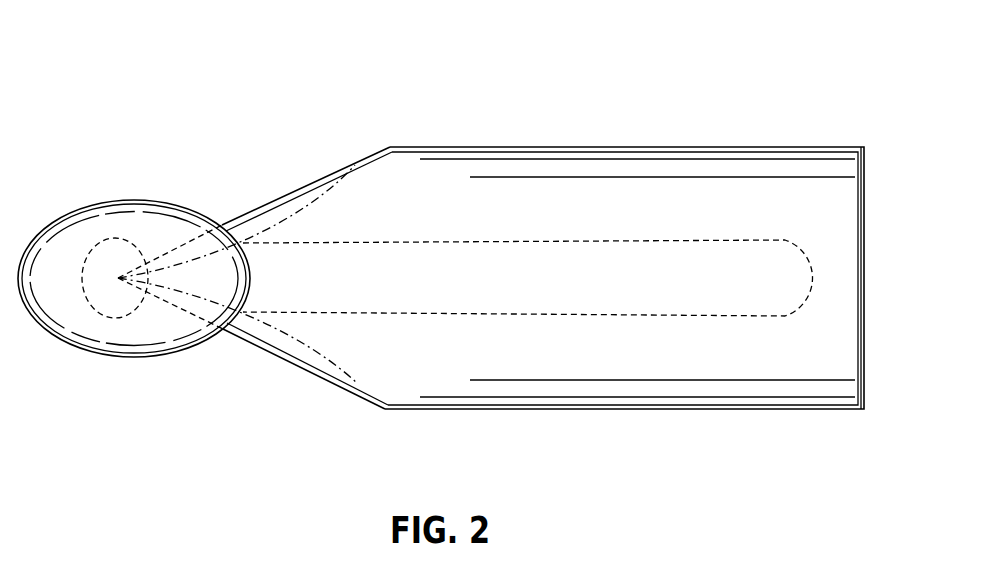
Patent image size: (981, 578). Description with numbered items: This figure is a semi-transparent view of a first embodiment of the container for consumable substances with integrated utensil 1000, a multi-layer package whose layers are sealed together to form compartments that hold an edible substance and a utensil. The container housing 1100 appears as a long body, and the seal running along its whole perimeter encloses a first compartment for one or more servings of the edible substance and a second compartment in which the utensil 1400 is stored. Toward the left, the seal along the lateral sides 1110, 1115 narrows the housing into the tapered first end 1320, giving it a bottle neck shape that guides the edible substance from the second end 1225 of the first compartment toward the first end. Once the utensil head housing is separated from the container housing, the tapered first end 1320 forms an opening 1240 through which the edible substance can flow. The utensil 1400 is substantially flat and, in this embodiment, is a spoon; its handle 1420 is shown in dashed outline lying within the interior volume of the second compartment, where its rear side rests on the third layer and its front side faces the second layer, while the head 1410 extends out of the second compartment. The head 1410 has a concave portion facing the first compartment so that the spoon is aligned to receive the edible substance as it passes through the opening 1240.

The container for consumable substances with integrated utensil 1000 is at (650, 66).
The container housing 1100 is at (622, 409).
The lateral side 1110 is at (818, 409).
The lateral side 1115 is at (523, 147).
The second end 1225 is at (864, 281).
The handle 1420 is at (400, 252).
The tapered first end 1320 is at (240, 230).
The opening 1240 is at (235, 338).
The utensil 1400 is at (125, 213).
The head 1410 is at (57, 340).